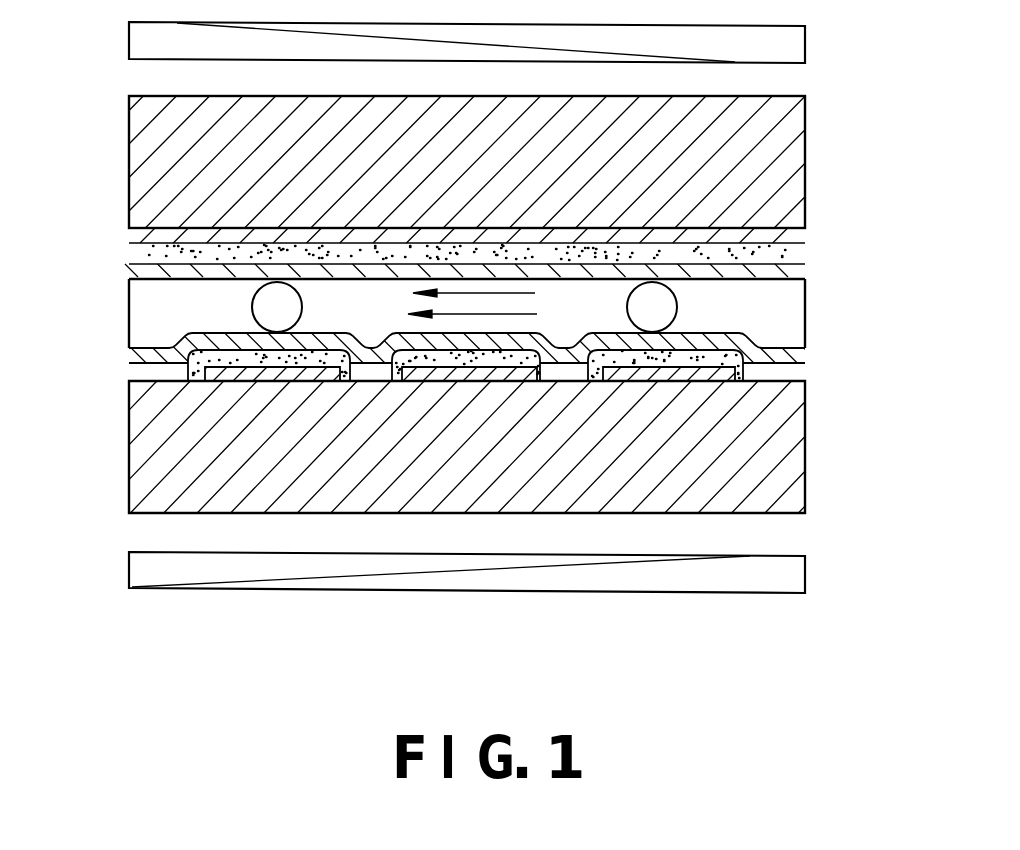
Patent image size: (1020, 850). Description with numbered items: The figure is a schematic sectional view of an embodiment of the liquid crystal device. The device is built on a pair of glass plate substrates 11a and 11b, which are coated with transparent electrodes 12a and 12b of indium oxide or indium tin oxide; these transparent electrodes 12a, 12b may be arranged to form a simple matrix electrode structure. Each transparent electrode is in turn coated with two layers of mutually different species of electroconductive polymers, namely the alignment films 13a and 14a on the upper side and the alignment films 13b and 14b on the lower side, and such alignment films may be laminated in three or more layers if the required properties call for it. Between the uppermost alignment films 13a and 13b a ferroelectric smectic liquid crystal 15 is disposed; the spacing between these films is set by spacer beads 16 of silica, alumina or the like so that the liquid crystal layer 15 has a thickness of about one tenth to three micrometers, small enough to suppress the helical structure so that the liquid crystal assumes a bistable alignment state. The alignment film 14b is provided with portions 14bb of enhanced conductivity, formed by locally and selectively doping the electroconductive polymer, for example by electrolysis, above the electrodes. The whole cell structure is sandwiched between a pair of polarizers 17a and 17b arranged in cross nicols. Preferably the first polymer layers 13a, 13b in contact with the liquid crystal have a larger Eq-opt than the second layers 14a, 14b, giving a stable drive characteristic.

The substrate 11a is at (792, 128).
The substrate 11b is at (805, 472).
The transparent electrode 12a is at (798, 243).
The transparent electrode 12b is at (200, 377).
The alignment film 13a is at (797, 276).
The alignment film 13b is at (803, 353).
The alignment film 14a is at (805, 251).
The alignment film 14b is at (805, 372).
The portions of enhanced conductivity 14bb is at (805, 418).
The ferroelectric smectic liquid crystal 15 is at (805, 318).
The spacers 16 is at (254, 306).
The polarizer 17a is at (793, 43).
The polarizer 17b is at (794, 574).